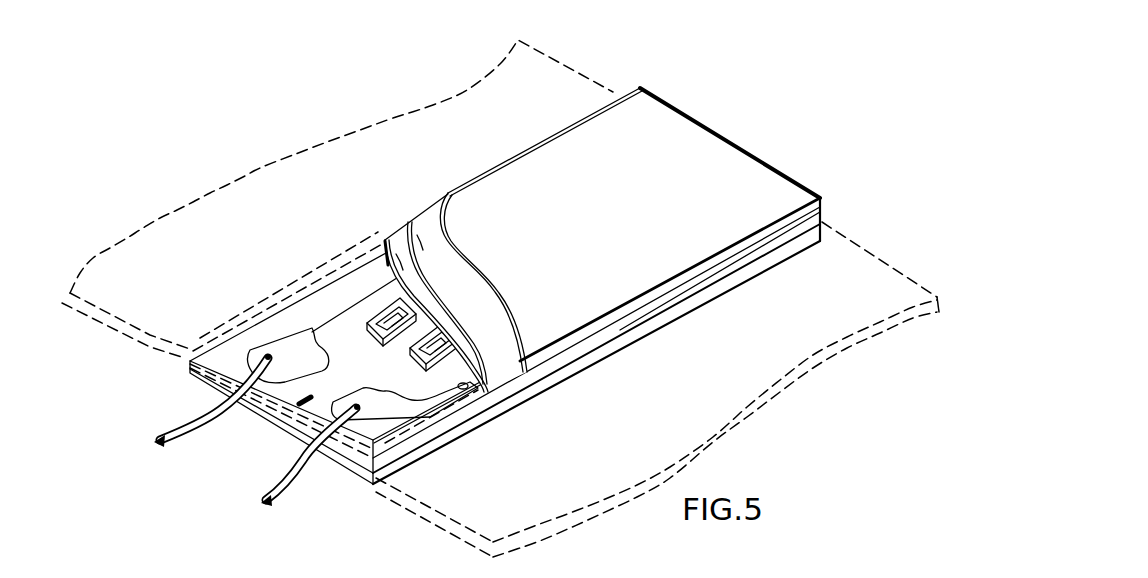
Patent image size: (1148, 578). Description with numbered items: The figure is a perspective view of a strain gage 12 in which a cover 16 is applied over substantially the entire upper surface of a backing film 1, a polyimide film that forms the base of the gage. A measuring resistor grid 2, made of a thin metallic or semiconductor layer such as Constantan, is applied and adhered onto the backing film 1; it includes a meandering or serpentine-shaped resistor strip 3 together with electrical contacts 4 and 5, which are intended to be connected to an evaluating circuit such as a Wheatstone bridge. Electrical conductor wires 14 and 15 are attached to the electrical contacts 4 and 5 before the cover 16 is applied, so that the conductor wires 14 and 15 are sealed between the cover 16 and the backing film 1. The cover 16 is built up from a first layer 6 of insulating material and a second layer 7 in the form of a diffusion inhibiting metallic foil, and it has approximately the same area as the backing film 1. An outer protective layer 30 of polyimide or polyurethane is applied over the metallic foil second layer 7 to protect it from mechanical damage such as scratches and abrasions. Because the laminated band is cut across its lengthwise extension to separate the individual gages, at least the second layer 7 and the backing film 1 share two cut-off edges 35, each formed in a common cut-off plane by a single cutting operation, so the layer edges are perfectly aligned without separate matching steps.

The backing film 1 is at (236, 391).
The measuring resistor grid 2 is at (468, 396).
The resistor strip 3 is at (388, 345).
The electrical contact 4 is at (284, 378).
The electrical contact 5 is at (372, 424).
The first layer 6 is at (384, 242).
The second layer 7 is at (405, 216).
The strain gage 12 is at (757, 130).
The electrical conductor wire 14 is at (182, 431).
The electrical conductor wire 15 is at (298, 488).
The cover 16 is at (215, 310).
The outer protective layer 30 is at (437, 211).
The cut-off edge 35 is at (506, 148).